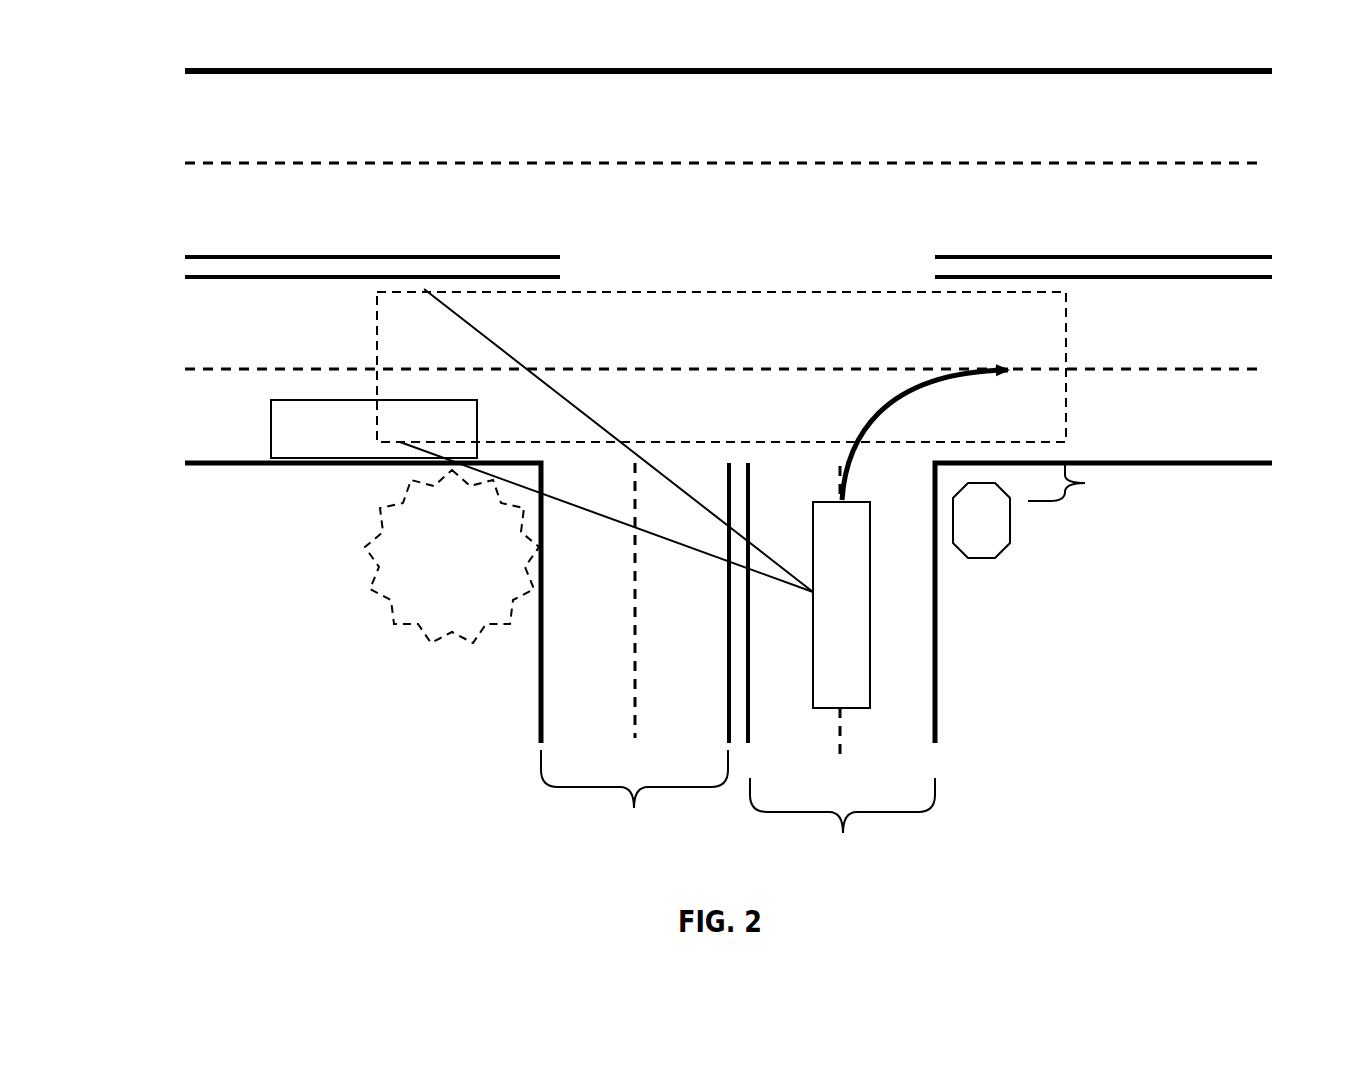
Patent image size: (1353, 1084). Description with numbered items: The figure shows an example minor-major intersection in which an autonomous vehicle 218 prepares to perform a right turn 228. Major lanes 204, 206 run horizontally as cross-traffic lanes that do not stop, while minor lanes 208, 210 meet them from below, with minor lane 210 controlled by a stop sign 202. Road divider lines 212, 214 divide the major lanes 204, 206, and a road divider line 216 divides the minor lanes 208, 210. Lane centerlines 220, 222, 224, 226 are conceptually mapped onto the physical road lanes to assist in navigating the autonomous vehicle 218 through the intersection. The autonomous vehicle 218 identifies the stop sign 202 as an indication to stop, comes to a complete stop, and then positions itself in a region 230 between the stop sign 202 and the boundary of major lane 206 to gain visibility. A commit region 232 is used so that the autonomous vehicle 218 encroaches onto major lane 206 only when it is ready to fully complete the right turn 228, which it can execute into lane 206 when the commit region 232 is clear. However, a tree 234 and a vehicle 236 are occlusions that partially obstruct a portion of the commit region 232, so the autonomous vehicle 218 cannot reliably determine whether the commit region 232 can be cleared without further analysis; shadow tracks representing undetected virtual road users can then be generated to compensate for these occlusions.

The stop sign 202 is at (1000, 534).
The major lane 204 is at (185, 71).
The major lane 206 is at (185, 277).
The minor lane 208 is at (541, 776).
The minor lane 210 is at (935, 810).
The road divider line 212 is at (526, 248).
The road divider line 214 is at (1229, 285).
The road divider line 216 is at (720, 684).
The autonomous vehicle 218 is at (860, 620).
The lane centerline 220 is at (836, 717).
The lane centerline 222 is at (626, 590).
The lane centerline 224 is at (278, 361).
The lane centerline 226 is at (244, 167).
The right turn 228 is at (875, 416).
The region 230 is at (1070, 501).
The commit region 232 is at (823, 326).
The tree 234 is at (495, 572).
The vehicle 236 is at (430, 440).